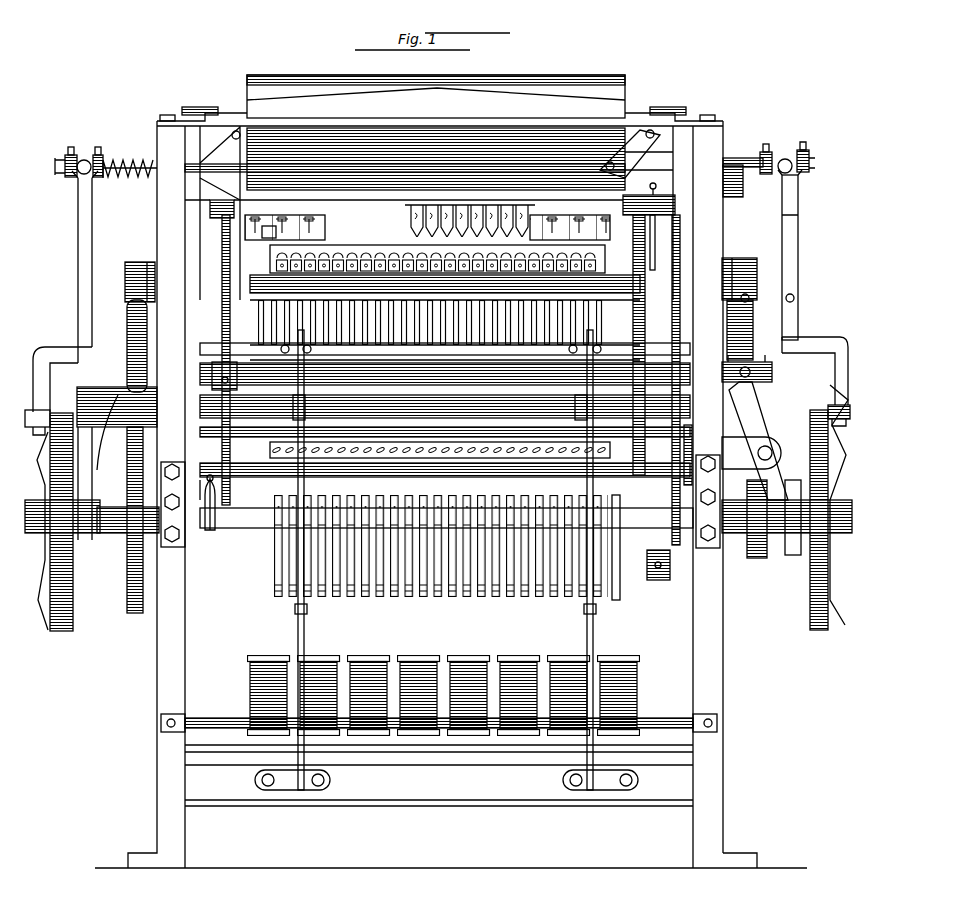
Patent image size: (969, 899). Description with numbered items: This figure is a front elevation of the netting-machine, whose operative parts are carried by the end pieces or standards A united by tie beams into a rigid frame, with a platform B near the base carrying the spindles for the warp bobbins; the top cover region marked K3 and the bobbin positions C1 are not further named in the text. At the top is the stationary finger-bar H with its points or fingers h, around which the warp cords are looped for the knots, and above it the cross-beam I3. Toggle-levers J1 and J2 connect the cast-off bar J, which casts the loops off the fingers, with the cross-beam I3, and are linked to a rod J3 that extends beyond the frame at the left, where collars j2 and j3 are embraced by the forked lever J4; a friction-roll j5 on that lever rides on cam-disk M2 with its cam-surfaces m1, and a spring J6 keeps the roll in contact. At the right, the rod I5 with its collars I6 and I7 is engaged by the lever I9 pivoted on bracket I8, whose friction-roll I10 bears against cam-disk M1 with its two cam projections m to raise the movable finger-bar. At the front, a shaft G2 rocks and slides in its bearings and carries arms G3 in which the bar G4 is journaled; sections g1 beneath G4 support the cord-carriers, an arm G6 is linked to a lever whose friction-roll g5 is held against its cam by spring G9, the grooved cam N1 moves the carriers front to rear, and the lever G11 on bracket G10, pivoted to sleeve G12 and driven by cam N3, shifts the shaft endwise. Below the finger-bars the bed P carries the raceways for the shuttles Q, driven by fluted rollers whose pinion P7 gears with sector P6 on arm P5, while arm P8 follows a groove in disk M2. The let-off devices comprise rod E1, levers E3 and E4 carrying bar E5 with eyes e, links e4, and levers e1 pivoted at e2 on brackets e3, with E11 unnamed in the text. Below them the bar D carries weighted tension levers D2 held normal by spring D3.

The end pieces or standards A is at (451, 487).
The platform B is at (240, 752).
The top cover K3 is at (540, 70).
The toggle-lever J1 is at (220, 213).
The cross-beam I3 is at (405, 159).
The toggle-lever J2 is at (636, 154).
The rod J3 is at (56, 159).
The collar j2 is at (90, 154).
The collar j3 is at (93, 143).
The spring J6 is at (130, 159).
The lever J4 is at (80, 248).
The cast-off bar J is at (70, 364).
The friction-roll j5 is at (42, 410).
The pinion P7 is at (440, 274).
The geared sector P6 is at (435, 339).
The rock-shaft arm P5 is at (415, 363).
The arm P8 is at (441, 475).
The cam-surfaces m1 is at (38, 600).
The cam-disk M2 is at (92, 520).
The rod or bar I5 is at (747, 153).
The collar I6 is at (771, 147).
The collar I7 is at (808, 149).
The lever I9 is at (798, 248).
The bracket I8 is at (805, 340).
The friction-roll I10 is at (836, 405).
The sleeve G12 is at (761, 368).
The lever G11 is at (758, 441).
The bracket G10 is at (751, 453).
The cam N3 is at (787, 530).
The cam-disk M1 is at (810, 594).
The cam projections m is at (833, 505).
The spring G9 is at (700, 455).
The friction-roll g5 is at (658, 571).
The grooved cam N1 is at (617, 550).
The arm G6 is at (654, 197).
The arms G3 is at (430, 360).
The shaft G2 is at (210, 380).
The stationary finger-bar H is at (185, 202).
The sections g1 is at (263, 234).
The bar G4 is at (427, 220).
The points or fingers h is at (470, 225).
The shuttles Q is at (422, 260).
The bed P is at (445, 317).
The pivot e2 is at (445, 391).
The bracket e3 is at (445, 398).
The lever e1 is at (445, 426).
The rod E1 is at (250, 437).
The bar E5 is at (426, 454).
The rail E11 is at (248, 478).
The cord or thread eyes e is at (490, 458).
The spring D3 is at (202, 502).
The bar D is at (446, 538).
The weighted lever D2 is at (460, 596).
The links e4 is at (584, 608).
The lever E3 is at (298, 626).
The lever E4 is at (593, 632).
The bobbins C1 is at (516, 660).